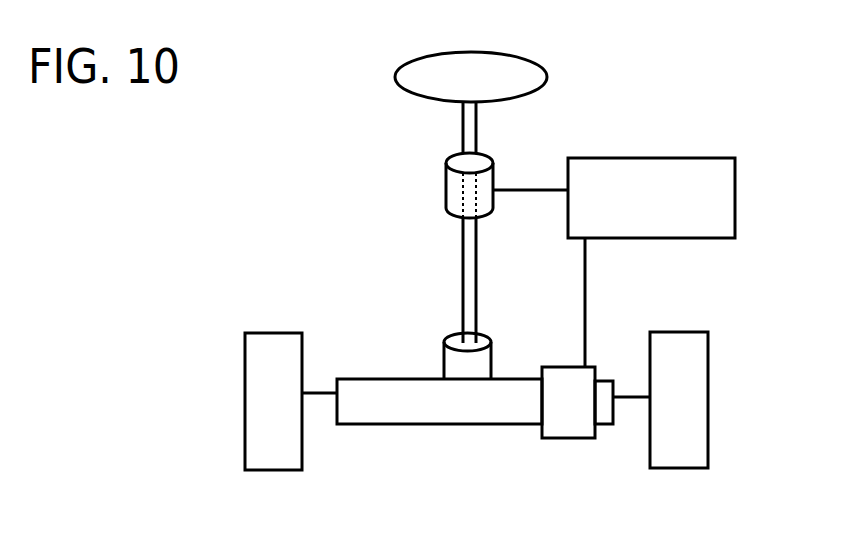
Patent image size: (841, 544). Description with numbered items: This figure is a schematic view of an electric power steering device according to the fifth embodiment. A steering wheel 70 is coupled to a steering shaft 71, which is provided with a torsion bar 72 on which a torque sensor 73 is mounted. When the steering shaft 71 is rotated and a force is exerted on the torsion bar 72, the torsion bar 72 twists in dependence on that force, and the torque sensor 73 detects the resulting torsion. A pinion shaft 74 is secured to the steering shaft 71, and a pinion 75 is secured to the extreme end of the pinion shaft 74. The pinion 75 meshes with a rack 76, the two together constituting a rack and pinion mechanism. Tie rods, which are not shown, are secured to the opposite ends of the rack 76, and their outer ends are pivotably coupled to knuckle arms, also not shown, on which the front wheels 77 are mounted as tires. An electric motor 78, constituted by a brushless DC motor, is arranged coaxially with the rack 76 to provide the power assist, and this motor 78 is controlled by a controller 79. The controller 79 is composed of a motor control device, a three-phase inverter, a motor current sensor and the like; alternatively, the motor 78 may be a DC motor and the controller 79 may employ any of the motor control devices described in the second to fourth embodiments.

The steering wheel 70 is at (517, 67).
The steering shaft 71 is at (468, 127).
The torsion bar 72 is at (467, 187).
The torque sensor 73 is at (455, 198).
The pinion shaft 74 is at (468, 270).
The pinion 75 is at (443, 353).
The rack 76 is at (410, 405).
The front wheels 77 is at (265, 375).
The electric motor 78 is at (562, 405).
The controller 79 is at (723, 182).